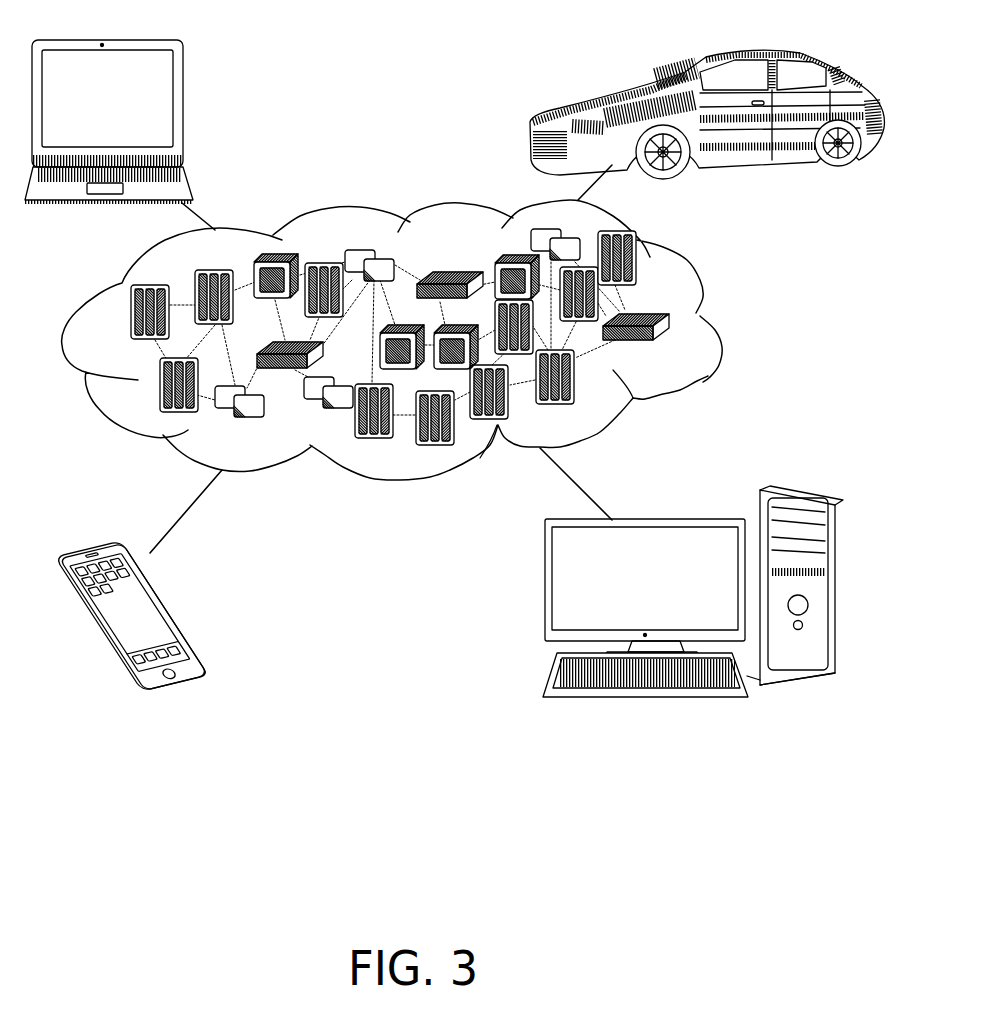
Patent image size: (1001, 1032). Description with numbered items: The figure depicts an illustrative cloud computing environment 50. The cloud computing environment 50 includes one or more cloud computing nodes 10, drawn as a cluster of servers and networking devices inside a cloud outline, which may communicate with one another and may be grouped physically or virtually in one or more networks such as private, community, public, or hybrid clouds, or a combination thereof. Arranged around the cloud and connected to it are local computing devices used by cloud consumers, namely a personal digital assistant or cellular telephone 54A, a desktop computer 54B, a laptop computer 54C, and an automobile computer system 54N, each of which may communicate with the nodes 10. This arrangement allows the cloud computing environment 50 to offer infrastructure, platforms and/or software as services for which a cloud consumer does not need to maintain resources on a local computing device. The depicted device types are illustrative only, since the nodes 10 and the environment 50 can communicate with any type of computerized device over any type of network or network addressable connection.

The cloud computing node 10 is at (672, 340).
The cloud computing environment 50 is at (717, 323).
The personal digital assistant or cellular telephone 54A is at (162, 612).
The desktop computer 54B is at (700, 518).
The laptop computer 54C is at (163, 118).
The automobile computer system 54N is at (528, 125).